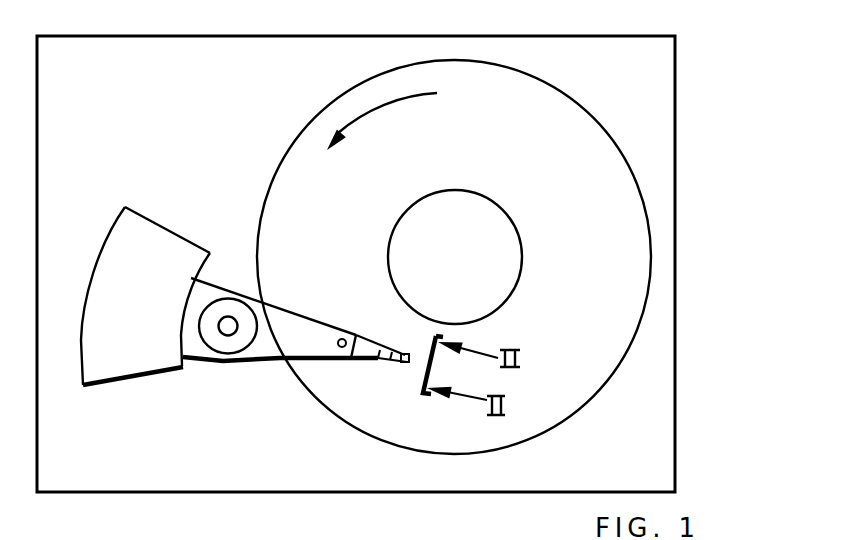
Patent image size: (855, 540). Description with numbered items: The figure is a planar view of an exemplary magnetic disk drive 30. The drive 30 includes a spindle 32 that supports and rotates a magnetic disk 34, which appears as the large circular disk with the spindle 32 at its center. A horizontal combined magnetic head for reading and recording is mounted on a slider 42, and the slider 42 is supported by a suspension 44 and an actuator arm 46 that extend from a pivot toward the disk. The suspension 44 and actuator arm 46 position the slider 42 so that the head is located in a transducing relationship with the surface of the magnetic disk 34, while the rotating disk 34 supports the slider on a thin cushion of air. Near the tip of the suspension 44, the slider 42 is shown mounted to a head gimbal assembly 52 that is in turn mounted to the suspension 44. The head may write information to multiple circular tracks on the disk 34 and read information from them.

The magnetic disk drive 30 is at (692, 41).
The spindle 32 is at (478, 190).
The magnetic disk 34 is at (582, 258).
The slider 42 is at (411, 362).
The suspension 44 is at (360, 360).
The actuator arm 46 is at (273, 302).
The head gimbal assembly 52 is at (400, 353).